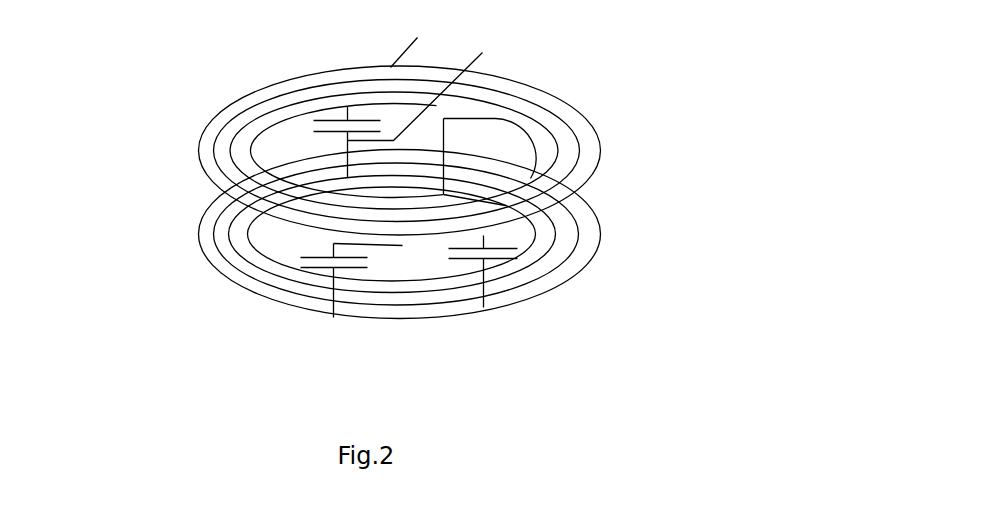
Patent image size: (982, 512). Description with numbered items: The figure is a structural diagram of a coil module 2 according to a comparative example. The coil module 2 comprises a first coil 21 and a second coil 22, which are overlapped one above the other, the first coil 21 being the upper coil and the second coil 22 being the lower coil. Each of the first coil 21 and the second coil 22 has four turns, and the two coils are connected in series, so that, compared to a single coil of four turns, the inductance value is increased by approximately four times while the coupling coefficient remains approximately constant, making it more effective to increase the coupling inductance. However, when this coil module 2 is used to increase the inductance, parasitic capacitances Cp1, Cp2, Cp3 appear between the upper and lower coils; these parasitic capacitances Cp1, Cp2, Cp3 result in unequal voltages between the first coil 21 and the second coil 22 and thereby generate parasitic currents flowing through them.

The coil module 2 is at (175, 155).
The first coil 21 is at (597, 147).
The second coil 22 is at (600, 233).
The parasitic capacitance Cp1 is at (363, 142).
The parasitic capacitance Cp2 is at (318, 279).
The parasitic capacitance Cp3 is at (463, 272).